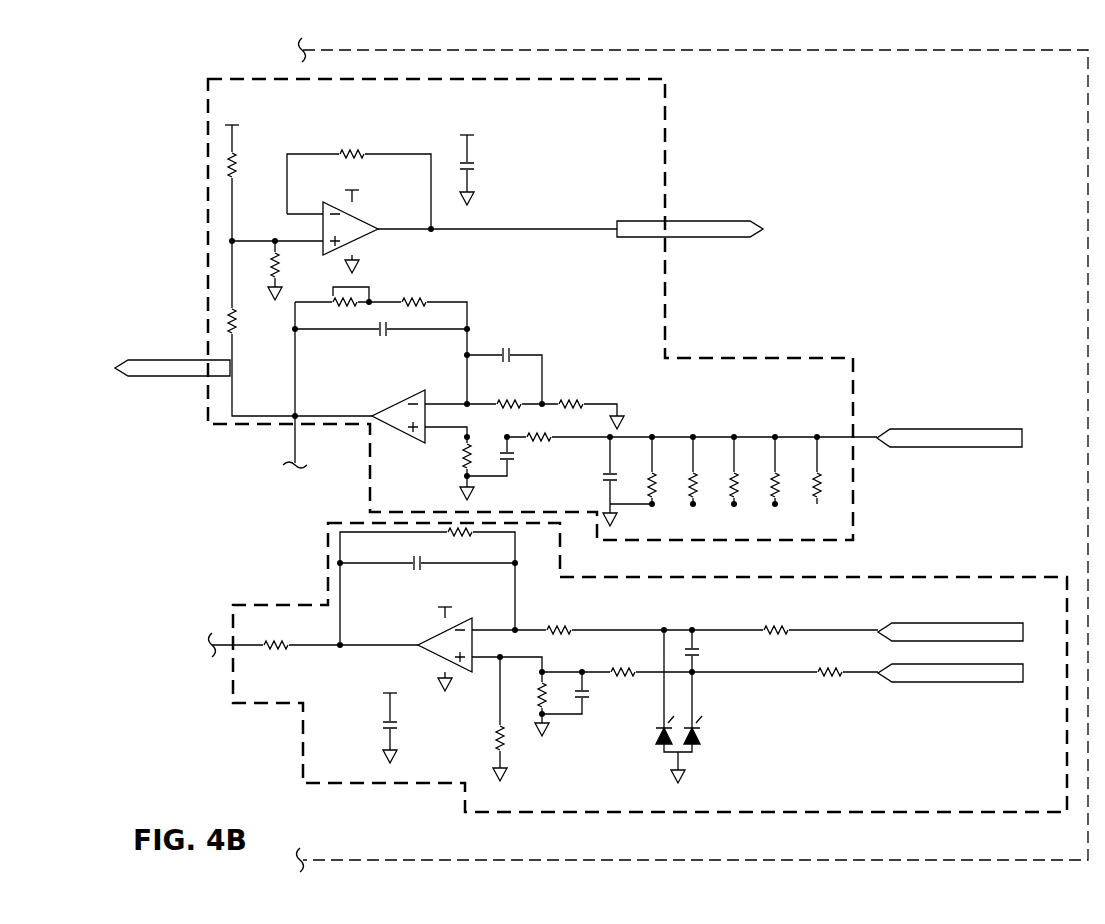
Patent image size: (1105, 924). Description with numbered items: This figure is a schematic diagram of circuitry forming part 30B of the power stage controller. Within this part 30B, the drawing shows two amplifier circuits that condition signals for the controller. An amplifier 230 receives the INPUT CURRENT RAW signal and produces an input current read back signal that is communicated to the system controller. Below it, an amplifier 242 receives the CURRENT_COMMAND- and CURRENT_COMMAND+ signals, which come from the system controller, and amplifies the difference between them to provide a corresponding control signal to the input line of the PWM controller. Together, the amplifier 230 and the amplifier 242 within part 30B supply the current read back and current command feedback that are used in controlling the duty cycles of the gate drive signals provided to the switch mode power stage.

The part of the controller 30B is at (582, 50).
The amplifier 230 is at (207, 167).
The amplifier 242 is at (637, 791).